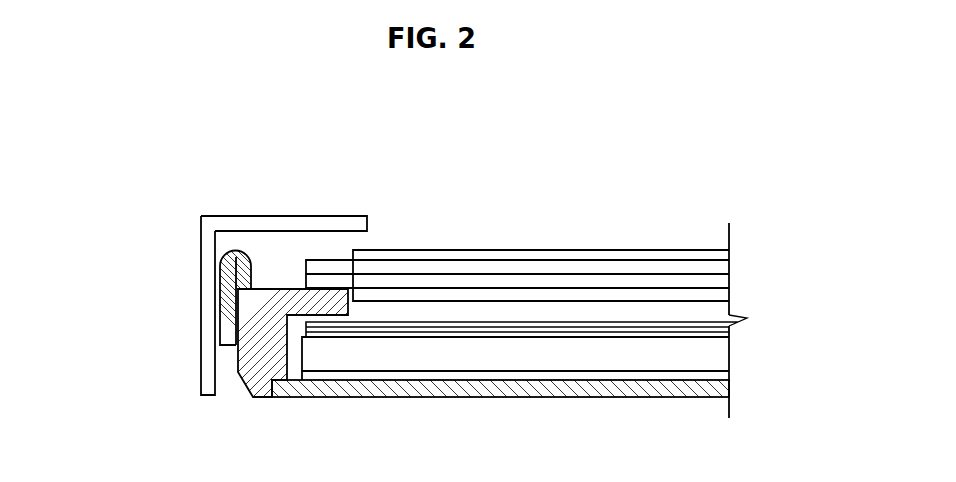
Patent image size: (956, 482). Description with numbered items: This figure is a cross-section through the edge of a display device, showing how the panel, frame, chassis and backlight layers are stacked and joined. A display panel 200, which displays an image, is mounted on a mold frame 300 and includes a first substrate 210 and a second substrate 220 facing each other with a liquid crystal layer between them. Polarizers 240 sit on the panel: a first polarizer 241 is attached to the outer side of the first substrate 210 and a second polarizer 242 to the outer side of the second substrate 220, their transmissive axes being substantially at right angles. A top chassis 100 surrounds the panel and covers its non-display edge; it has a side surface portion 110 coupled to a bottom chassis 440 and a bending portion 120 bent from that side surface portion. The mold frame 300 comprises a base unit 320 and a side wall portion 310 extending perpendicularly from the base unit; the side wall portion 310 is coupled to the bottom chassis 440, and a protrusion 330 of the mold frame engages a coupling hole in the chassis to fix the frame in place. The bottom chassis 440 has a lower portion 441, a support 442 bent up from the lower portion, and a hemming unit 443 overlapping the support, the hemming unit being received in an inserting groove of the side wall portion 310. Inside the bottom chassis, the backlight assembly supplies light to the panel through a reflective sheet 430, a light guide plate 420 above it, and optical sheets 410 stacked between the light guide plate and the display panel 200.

The top chassis 100 is at (209, 294).
The side surface portion 110 is at (208, 252).
The bending portion 120 is at (258, 222).
The display panel 200 is at (517, 210).
The first substrate 210 is at (640, 283).
The second substrate 220 is at (572, 268).
The polarizers 240 is at (541, 217).
The first polarizer 241 is at (492, 297).
The second polarizer 242 is at (420, 255).
The mold frame 300 is at (315, 257).
The side wall portion 310 is at (270, 340).
The base unit 320 is at (325, 300).
The protrusion 330 is at (263, 390).
The optical sheets 410 is at (547, 335).
The light guide plate 420 is at (713, 355).
The reflective sheet 430 is at (713, 375).
The bottom chassis 440 is at (406, 334).
The lower portion 441 is at (293, 393).
The support 442 is at (229, 329).
The hemming unit 443 is at (245, 295).